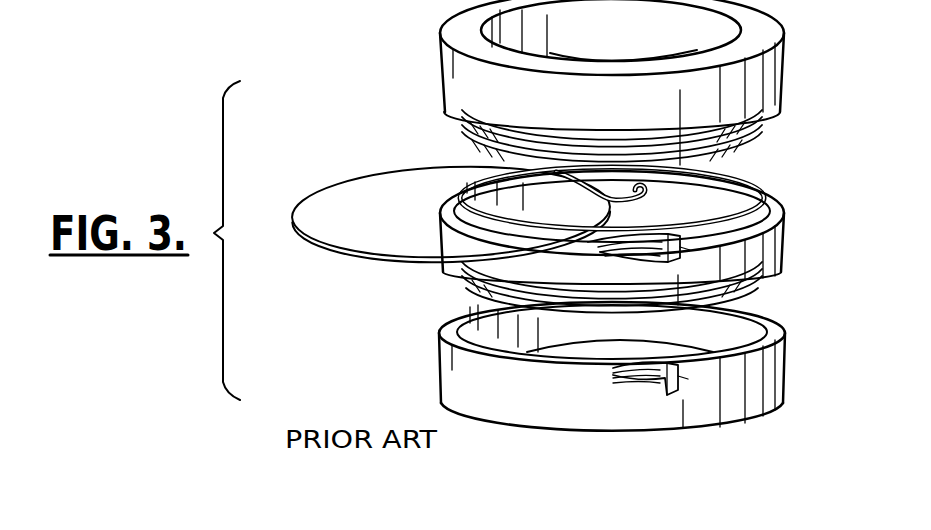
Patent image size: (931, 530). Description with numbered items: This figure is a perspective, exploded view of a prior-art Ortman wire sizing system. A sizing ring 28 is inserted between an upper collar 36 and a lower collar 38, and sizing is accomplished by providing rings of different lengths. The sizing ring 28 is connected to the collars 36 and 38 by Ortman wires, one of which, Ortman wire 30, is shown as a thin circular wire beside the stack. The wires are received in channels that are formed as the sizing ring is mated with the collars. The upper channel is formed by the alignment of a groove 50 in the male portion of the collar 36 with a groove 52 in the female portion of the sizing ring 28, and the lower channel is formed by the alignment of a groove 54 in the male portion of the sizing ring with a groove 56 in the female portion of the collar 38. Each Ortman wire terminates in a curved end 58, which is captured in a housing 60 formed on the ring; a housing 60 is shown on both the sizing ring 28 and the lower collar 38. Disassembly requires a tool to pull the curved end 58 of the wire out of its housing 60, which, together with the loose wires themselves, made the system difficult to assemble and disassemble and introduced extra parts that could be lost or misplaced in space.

The sizing ring 28 is at (776, 240).
The Ortman wire 30 is at (366, 249).
The collar 36 is at (458, 63).
The collar 38 is at (753, 398).
The groove 50 is at (766, 140).
The groove 52 is at (764, 180).
The groove 54 is at (768, 281).
The groove 56 is at (458, 301).
The curved end 58 is at (655, 197).
The housing 60 is at (652, 254).